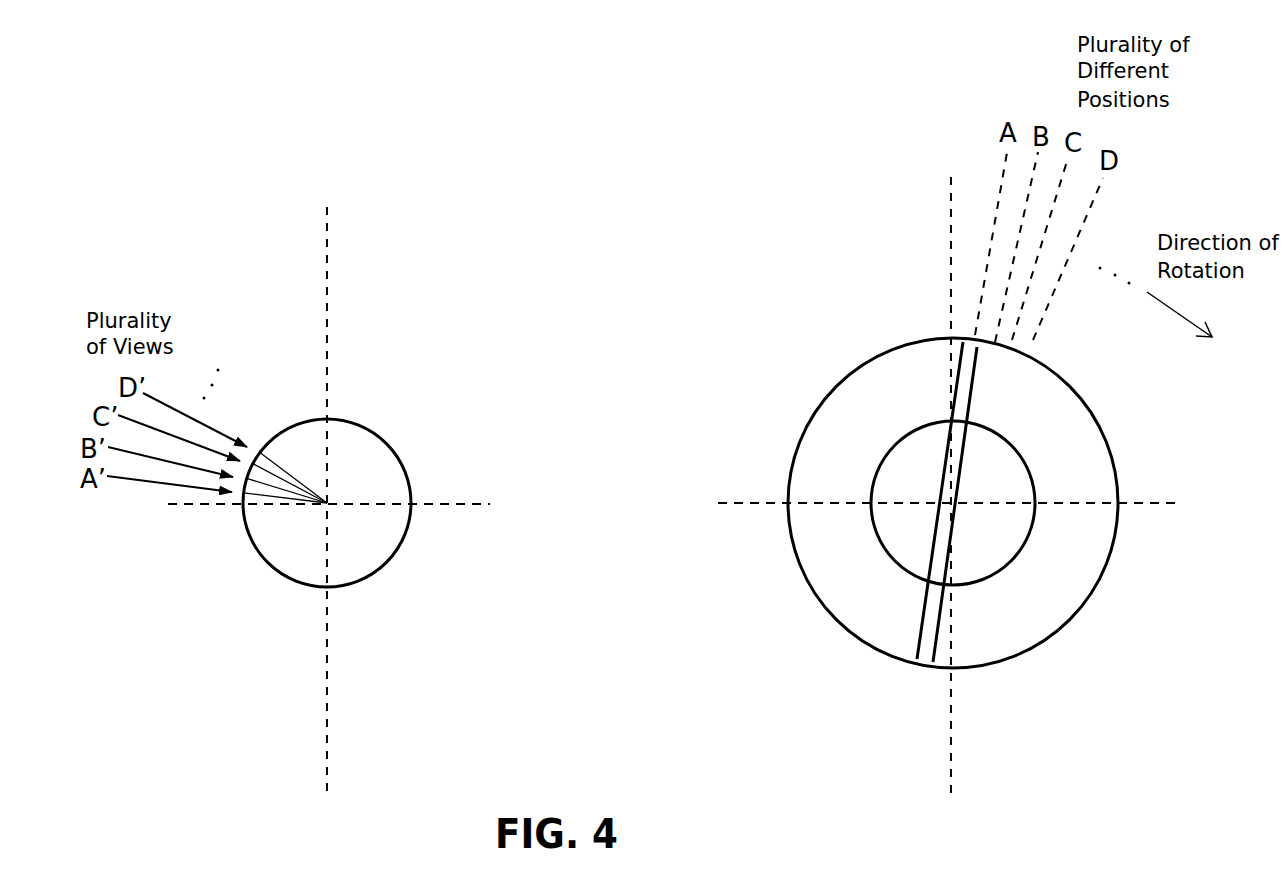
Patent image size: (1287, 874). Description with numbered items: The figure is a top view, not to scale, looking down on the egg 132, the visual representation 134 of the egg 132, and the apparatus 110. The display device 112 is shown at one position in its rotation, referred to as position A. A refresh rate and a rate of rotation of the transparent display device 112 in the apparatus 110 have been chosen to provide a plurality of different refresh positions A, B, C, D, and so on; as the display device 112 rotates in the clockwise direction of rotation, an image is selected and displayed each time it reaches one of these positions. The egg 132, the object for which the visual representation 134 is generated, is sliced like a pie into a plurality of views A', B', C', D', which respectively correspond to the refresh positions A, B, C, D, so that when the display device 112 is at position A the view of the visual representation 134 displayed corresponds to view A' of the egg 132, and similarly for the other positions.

The apparatus 110 is at (1074, 621).
The display device 112 is at (922, 603).
The visual representation 134 is at (902, 433).
The egg 132 is at (390, 452).